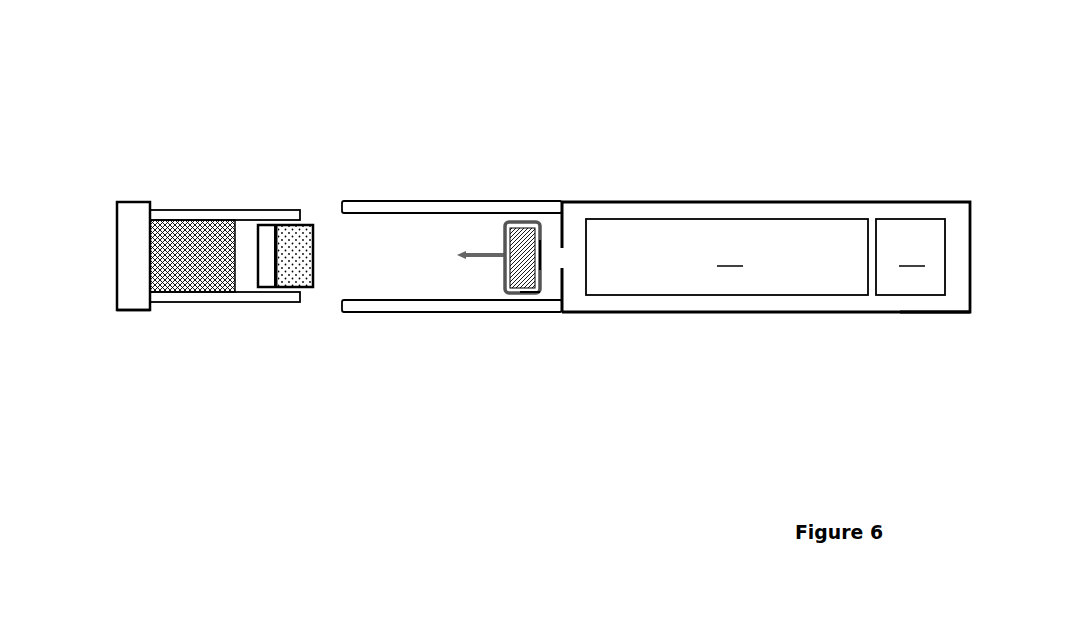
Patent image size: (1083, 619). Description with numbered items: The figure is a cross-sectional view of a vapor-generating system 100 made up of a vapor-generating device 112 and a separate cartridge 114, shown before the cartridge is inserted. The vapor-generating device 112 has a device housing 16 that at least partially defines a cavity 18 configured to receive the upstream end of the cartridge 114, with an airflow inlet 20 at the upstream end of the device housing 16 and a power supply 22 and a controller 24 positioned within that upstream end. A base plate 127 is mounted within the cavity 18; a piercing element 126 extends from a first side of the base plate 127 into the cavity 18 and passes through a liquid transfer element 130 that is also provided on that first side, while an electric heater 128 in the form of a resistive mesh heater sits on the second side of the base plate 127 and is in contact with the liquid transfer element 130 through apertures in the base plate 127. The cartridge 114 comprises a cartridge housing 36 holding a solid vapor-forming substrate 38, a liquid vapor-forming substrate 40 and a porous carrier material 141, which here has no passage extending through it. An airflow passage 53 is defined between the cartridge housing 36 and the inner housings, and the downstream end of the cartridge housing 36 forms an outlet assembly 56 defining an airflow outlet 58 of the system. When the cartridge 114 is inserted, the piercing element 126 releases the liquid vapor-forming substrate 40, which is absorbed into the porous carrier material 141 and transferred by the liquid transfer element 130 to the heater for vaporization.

The vapor-generating system 100 is at (766, 234).
The vapor-generating device 112 is at (671, 195).
The device housing 16 is at (571, 203).
The cavity 18 is at (397, 242).
The airflow inlet 20 is at (957, 312).
The power supply 22 is at (727, 257).
The controller 24 is at (910, 257).
The piercing element 126 is at (480, 252).
The base plate 127 is at (538, 290).
The electric heater 128 is at (540, 255).
The liquid transfer element 130 is at (520, 233).
The cartridge housing 36 is at (235, 211).
The solid vapor-forming substrate 38 is at (190, 268).
The liquid vapor-forming substrate 40 is at (267, 242).
The airflow passage 53 is at (288, 222).
The outlet assembly 56 is at (127, 312).
The airflow outlet 58 is at (117, 252).
The cartridge 114 is at (186, 204).
The porous carrier material 141 is at (293, 275).